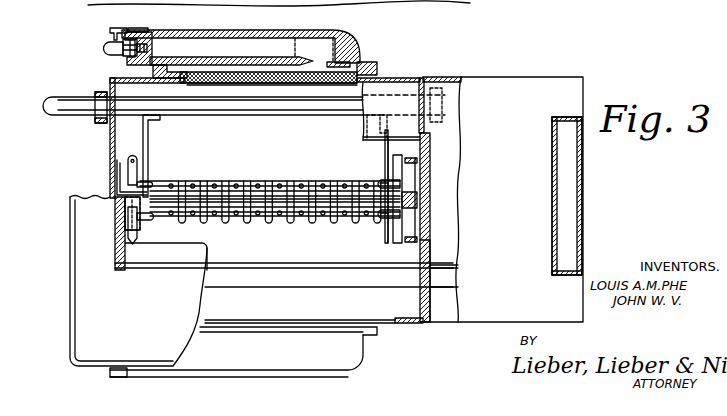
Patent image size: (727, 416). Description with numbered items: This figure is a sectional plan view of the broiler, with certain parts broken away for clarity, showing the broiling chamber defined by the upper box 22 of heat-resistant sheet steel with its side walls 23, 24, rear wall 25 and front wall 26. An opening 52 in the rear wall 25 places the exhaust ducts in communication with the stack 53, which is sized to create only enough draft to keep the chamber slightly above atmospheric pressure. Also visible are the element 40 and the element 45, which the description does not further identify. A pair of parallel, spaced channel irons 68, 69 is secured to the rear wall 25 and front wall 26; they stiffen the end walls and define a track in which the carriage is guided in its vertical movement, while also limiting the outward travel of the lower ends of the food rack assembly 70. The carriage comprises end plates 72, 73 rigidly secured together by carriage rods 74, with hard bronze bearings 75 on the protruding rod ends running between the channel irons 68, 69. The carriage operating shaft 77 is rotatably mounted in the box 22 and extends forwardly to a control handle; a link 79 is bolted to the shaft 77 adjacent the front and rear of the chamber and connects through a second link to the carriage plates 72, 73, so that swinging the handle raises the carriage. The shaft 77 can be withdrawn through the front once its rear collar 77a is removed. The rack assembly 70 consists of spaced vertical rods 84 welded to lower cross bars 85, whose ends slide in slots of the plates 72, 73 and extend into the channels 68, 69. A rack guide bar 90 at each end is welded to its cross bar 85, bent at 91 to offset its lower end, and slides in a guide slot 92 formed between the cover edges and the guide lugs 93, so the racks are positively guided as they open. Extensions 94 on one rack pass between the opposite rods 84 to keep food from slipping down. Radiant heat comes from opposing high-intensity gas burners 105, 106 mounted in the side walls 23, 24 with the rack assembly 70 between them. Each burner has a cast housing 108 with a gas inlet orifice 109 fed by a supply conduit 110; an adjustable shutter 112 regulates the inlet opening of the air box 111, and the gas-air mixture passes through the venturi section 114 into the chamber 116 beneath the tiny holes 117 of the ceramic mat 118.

The upper box 22 is at (424, 73).
The side wall 23 is at (401, 77).
The side wall 24 is at (400, 325).
The rear wall 25 is at (430, 247).
The front wall 26 is at (112, 152).
The inner housing 40 is at (363, 125).
The lower housing 45 is at (86, 287).
The opening 52 is at (428, 88).
The stack 53 is at (517, 97).
The channel iron 68 is at (117, 172).
The channel iron 69 is at (417, 226).
The food rack assembly 70 is at (263, 180).
The end plate 72 is at (131, 157).
The end plate 73 is at (400, 242).
The carriage rods 74 is at (366, 200).
The bearings 75 is at (417, 198).
The carriage operating shaft 77 is at (70, 113).
The rear collar 77a is at (447, 122).
The link 79 is at (148, 147).
The vertical rods 84 is at (197, 183).
The lower cross bars 85 is at (168, 184).
The rack guide bar 90 is at (137, 167).
The bend 91 is at (160, 184).
The guide slots 92 is at (125, 237).
The guide lugs 93 is at (125, 208).
The extensions 94 is at (288, 225).
The high-intensity radiation gas burner 105 is at (223, 15).
The high-intensity radiation gas burner 106 is at (228, 361).
The cast housing 108 is at (268, 50).
The gas inlet orifice 109 is at (150, 30).
The supply conduit 110 is at (106, 46).
The air box 111 is at (148, 30).
The adjustable shutter 112 is at (117, 28).
The venturi section 114 is at (292, 32).
The chamber 116 is at (233, 60).
The tiny holes 117 is at (222, 84).
The ceramic mat 118 is at (262, 84).